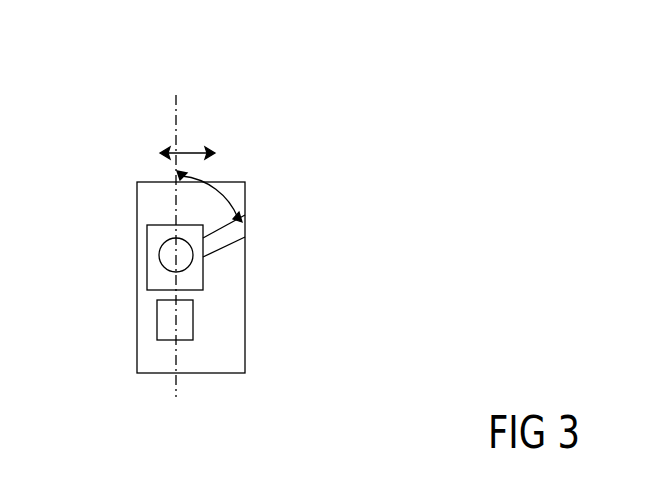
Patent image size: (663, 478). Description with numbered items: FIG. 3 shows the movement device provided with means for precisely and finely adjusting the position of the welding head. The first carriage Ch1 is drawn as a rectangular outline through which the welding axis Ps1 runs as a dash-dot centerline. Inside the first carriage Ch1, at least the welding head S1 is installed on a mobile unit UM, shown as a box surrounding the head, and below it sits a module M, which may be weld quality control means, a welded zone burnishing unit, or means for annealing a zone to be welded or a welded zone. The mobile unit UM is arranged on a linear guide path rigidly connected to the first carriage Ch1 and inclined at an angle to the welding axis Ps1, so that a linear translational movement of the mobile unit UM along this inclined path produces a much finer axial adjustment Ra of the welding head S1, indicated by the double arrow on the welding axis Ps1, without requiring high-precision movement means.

The first carriage Ch1 is at (246, 336).
The welding axis Ps1 is at (172, 115).
The axial adjustment Ra is at (186, 153).
The mobile unit UM is at (140, 227).
The welding head S1 is at (158, 253).
The module M is at (157, 315).